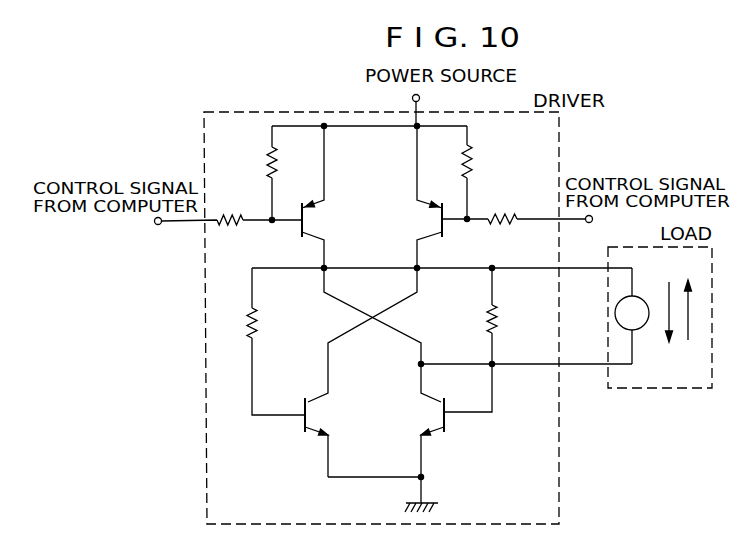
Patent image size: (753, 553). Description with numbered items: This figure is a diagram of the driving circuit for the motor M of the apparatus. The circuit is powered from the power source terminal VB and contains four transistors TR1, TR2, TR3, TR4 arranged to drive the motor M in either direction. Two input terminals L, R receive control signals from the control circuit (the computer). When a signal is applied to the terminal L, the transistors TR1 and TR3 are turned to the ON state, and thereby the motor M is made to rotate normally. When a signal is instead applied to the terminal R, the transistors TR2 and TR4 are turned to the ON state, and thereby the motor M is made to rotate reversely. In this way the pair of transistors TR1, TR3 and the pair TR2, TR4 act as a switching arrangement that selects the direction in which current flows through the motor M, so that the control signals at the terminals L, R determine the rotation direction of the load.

The transistor TR1 is at (324, 197).
The transistor TR2 is at (420, 197).
The transistor TR3 is at (328, 437).
The transistor TR4 is at (421, 437).
The power source terminal VB is at (427, 107).
The terminal L is at (218, 224).
The terminal R is at (526, 218).
The motor M is at (632, 316).